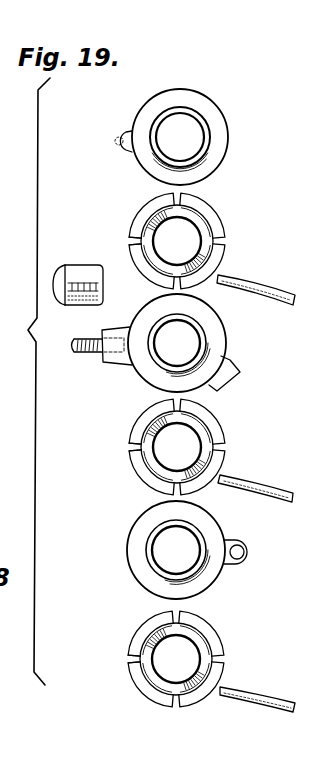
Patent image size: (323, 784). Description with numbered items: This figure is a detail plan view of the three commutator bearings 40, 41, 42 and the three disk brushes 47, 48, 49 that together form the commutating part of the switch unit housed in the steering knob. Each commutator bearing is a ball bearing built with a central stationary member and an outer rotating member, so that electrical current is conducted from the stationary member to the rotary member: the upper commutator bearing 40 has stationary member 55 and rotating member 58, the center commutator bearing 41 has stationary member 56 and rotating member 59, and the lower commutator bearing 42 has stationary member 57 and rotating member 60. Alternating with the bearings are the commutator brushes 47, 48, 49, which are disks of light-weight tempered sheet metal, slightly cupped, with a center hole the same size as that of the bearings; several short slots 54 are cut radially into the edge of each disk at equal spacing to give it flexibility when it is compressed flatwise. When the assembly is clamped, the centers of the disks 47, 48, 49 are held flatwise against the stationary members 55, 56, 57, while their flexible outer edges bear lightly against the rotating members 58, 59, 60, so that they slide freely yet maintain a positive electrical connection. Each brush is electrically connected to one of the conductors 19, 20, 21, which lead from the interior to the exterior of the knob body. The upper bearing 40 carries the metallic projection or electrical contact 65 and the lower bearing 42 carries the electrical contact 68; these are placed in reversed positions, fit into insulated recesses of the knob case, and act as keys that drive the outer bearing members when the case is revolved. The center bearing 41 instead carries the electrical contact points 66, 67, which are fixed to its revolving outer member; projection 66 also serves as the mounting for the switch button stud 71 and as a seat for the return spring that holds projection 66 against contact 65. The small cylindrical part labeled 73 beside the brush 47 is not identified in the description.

The conductor 19 is at (265, 697).
The conductor 20 is at (260, 485).
The conductor 21 is at (265, 287).
The upper commutator bearing 40 is at (171, 123).
The center commutator bearing 41 is at (180, 355).
The lower commutator bearing 42 is at (218, 558).
The commutator brush 47 is at (225, 220).
The commutator brush 48 is at (152, 478).
The commutator brush 49 is at (160, 692).
The slot 54 is at (128, 240).
The stationary member 55 is at (195, 110).
The stationary member 56 is at (198, 322).
The stationary member 57 is at (195, 527).
The rotating member 58 is at (226, 162).
The rotating member 59 is at (228, 350).
The rotating member 60 is at (267, 553).
The electrical contact 65 is at (110, 142).
The electrical contact point 66 is at (112, 363).
The electrical contact point 67 is at (236, 378).
The electrical contact 68 is at (246, 558).
The switch button stud 71 is at (80, 354).
The plug 73 is at (87, 265).